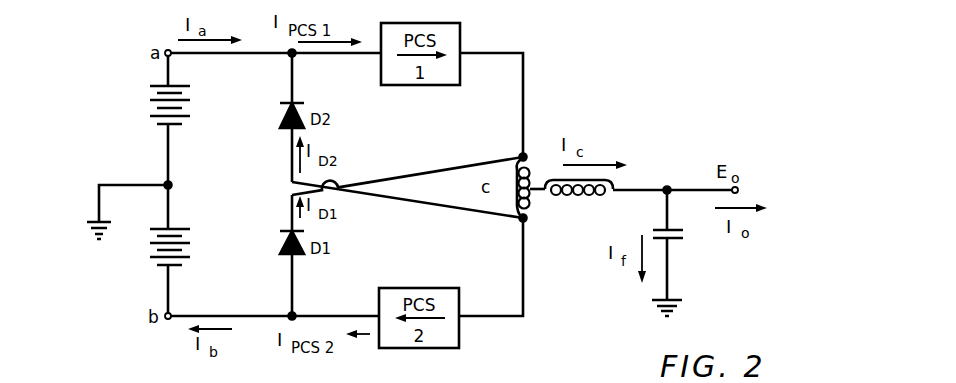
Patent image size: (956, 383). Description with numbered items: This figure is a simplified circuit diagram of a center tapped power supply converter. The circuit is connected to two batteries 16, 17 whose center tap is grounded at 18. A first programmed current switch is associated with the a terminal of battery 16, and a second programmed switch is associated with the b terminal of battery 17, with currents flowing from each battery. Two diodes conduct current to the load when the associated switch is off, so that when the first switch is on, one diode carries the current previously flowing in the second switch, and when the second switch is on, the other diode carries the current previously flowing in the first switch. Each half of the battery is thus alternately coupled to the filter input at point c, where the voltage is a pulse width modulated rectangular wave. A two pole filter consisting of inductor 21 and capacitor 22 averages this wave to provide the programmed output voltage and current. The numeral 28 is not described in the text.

The battery 16 is at (147, 107).
The battery 17 is at (147, 250).
The ground 18 is at (99, 190).
The inductor 21 is at (572, 199).
The capacitor 22 is at (690, 238).
The transformer 28 is at (441, 380).